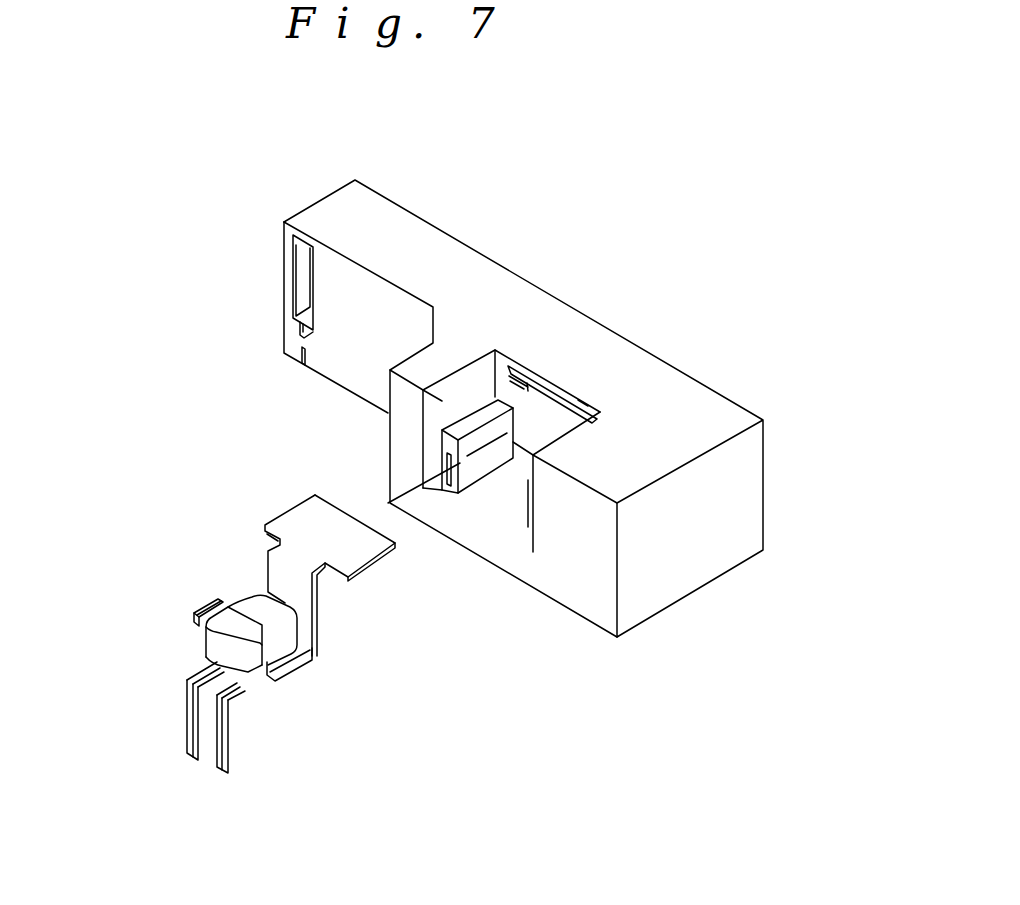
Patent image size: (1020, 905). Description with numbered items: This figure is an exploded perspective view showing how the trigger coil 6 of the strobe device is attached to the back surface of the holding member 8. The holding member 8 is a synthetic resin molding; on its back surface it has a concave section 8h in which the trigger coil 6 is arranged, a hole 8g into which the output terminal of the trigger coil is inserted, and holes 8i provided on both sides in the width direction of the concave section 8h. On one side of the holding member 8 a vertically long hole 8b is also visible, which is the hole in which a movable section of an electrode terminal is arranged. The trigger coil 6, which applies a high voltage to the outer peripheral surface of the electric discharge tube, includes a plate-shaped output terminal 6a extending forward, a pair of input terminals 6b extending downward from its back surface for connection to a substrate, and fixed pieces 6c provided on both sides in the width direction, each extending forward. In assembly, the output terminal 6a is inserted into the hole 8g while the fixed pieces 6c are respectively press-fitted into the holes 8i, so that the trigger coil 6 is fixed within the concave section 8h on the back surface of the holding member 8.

The holding member 8 is at (538, 312).
The vertically long hole 8b is at (303, 273).
The hole 8g is at (577, 412).
The concave section 8h is at (470, 385).
The hole 8i is at (440, 486).
The trigger coil 6 is at (227, 604).
The output terminal 6a is at (327, 527).
The input terminal 6b is at (186, 735).
The fixed piece 6c is at (193, 632).